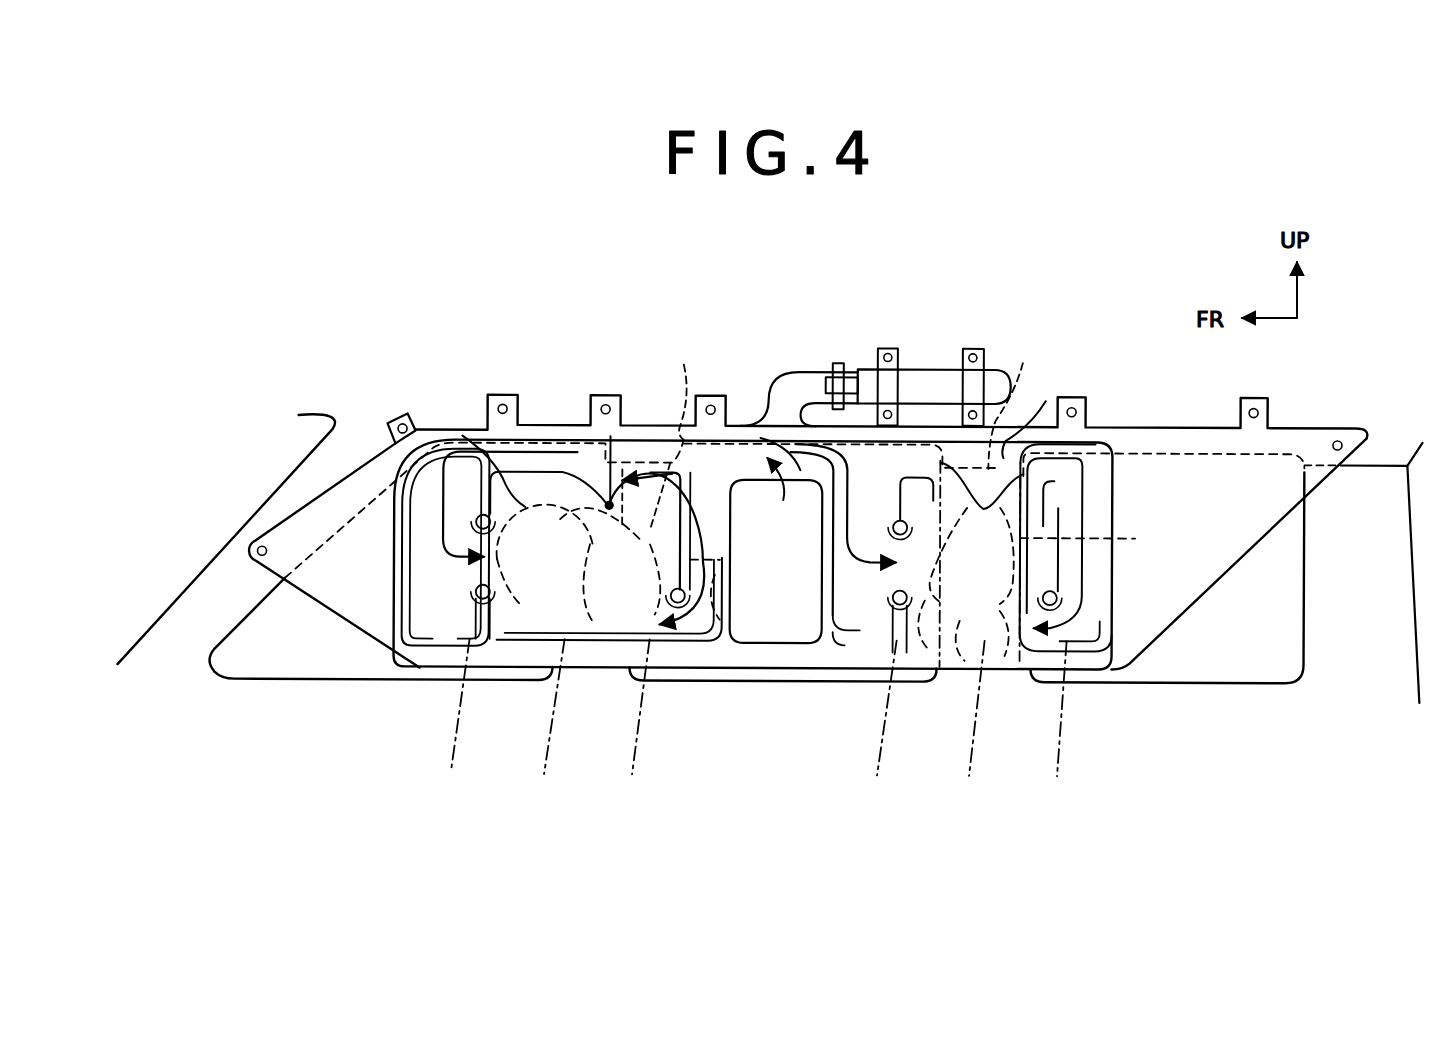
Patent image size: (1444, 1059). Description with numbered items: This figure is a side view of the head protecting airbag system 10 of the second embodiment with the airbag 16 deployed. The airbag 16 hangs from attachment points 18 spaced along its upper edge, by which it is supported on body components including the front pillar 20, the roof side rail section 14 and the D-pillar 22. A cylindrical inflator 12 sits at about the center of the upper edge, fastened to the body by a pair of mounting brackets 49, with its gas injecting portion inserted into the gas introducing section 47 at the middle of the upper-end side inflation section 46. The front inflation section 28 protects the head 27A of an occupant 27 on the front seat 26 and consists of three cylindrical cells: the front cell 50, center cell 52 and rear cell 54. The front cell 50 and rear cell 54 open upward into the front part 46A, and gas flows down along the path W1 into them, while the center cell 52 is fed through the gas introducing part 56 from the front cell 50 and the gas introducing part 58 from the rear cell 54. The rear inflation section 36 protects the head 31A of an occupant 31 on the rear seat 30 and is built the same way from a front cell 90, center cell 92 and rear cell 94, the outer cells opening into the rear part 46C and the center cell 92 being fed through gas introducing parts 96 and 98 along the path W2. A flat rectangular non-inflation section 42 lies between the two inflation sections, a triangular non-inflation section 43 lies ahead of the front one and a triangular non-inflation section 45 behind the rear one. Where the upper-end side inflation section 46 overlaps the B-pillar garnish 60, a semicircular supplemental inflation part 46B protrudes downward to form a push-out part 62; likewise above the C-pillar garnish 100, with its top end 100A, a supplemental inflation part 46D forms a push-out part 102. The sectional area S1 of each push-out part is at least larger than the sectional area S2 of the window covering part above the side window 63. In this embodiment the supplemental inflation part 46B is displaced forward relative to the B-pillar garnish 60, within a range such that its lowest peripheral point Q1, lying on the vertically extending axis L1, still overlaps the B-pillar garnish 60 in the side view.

The head protecting airbag system 10 is at (942, 322).
The inflator 12 is at (918, 378).
The roof side rail section 14 is at (1137, 426).
The airbag 16 is at (472, 418).
The attachment points 18 is at (398, 426).
The front pillar 20 is at (218, 569).
The D-pillar 22 is at (1388, 520).
The front seat 26 is at (640, 753).
The occupant 27 is at (450, 753).
The head 27A is at (460, 440).
The front inflation section 28 is at (386, 573).
The rear seat 30 is at (1066, 753).
The occupant 31 is at (880, 753).
The head 31A is at (1101, 541).
The rear inflation section 36 is at (822, 613).
The non-inflation section 42 is at (745, 664).
The non-inflation section 43 is at (328, 605).
The non-inflation section 45 is at (1222, 545).
The upper-end side inflation section 46 is at (781, 493).
The front part 46A is at (663, 432).
The supplemental inflation part 46B is at (651, 584).
The rear part 46C is at (1037, 417).
The supplemental inflation part 46D is at (963, 614).
The gas introducing section 47 is at (805, 395).
The mounting brackets 49 is at (880, 375).
The front cell 50 is at (404, 537).
The center cell 52 is at (545, 662).
The rear cell 54 is at (722, 551).
The gas introducing part 56 is at (476, 579).
The gas introducing part 58 is at (680, 660).
The B-pillar garnish 60 is at (708, 566).
The push-out part 62 is at (717, 547).
The side window 63 is at (356, 681).
The front cell 90 is at (832, 646).
The center cell 92 is at (958, 656).
The rear cell 94 is at (1105, 570).
The gas introducing part 96 is at (900, 576).
The gas introducing part 98 is at (1040, 662).
The C-pillar garnish 100 is at (976, 564).
The top end 100A is at (1028, 404).
The push-out part 102 is at (1000, 469).
The path W1 is at (445, 538).
The path W2 is at (1127, 506).
The sectional area S1 is at (637, 467).
The sectional area S2 is at (544, 554).
The lowest peripheral point Q1 is at (591, 540).
The vertically extending axis L1 is at (537, 473).